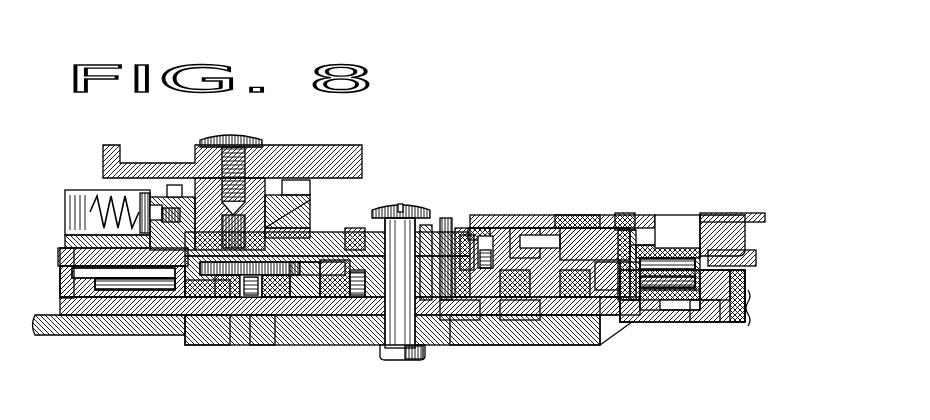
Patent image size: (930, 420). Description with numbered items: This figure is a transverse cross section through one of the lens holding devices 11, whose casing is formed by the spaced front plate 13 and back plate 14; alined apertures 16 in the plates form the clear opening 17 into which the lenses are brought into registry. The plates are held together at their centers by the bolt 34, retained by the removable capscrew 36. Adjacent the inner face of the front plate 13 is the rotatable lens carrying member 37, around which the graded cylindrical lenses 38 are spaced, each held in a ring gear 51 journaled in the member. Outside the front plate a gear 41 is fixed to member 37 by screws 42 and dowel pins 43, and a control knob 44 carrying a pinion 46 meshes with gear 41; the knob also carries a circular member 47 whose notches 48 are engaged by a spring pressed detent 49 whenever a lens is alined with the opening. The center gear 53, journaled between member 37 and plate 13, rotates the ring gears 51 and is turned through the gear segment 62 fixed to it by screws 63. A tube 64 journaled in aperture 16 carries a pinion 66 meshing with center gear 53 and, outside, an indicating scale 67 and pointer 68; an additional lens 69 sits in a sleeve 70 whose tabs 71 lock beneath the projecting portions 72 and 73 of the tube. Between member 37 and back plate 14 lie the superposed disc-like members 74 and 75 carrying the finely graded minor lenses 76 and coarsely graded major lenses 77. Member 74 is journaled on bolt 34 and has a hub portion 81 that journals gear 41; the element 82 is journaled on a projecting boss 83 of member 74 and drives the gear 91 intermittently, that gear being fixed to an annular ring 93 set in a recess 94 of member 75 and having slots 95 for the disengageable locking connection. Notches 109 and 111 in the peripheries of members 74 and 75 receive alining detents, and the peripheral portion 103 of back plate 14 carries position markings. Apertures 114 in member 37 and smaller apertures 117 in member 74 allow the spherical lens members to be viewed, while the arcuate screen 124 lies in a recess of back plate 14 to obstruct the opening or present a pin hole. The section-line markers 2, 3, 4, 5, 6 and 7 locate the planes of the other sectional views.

The section layer 2 is at (42, 251).
The section layer 3 is at (60, 257).
The section layer 4 is at (14, 294).
The section layer 5 is at (60, 297).
The section layer 6 is at (36, 313).
The section layer 7 is at (18, 315).
The lens holding device 11 is at (430, 161).
The front plate 13 is at (590, 245).
The back plate 14 is at (548, 335).
The alined apertures 16 is at (684, 232).
The clear opening 17 is at (685, 320).
The bolt 34 is at (428, 332).
The removable capscrew 36 is at (402, 210).
The lens carrying member 37 is at (520, 240).
The cylindrical lenses 38 is at (632, 272).
The gear 41 is at (548, 236).
The screws 42 is at (355, 232).
The dowel pins 43 is at (448, 230).
The control knob 44 is at (350, 156).
The pinion 46 is at (298, 208).
The circular member 47 is at (304, 214).
The notches 48 is at (170, 215).
The spring pressed detent 49 is at (157, 212).
The ring gears 51 is at (90, 285).
The center gear 53 is at (296, 292).
The gear segment 62 is at (480, 228).
The screws 63 is at (488, 240).
The tube 64 is at (714, 226).
The pinion 66 is at (748, 258).
The wall 67 is at (468, 240).
The pointer 68 is at (566, 224).
The additional lens 69 is at (666, 256).
The sleeve 70 is at (646, 248).
The tabs 71 is at (628, 240).
The projecting portion 72 is at (738, 216).
The projecting portion 73 is at (626, 224).
The rotatable member 74 is at (715, 292).
The rotatable member 75 is at (736, 305).
The minor lenses 76 is at (120, 290).
The major lenses 77 is at (700, 318).
The hub portion 81 is at (427, 228).
The element 82 is at (520, 318).
The projecting boss 83 is at (466, 318).
The gear 91 is at (224, 300).
The annular ring 93 is at (276, 300).
The recess 94 is at (248, 300).
The slots 95 is at (262, 322).
The peripheral portion 103 is at (72, 300).
The notches 109 is at (60, 262).
The notches 111 is at (763, 313).
The apertures 114 is at (200, 300).
The smaller apertures 117 is at (210, 325).
The screen 124 is at (627, 305).